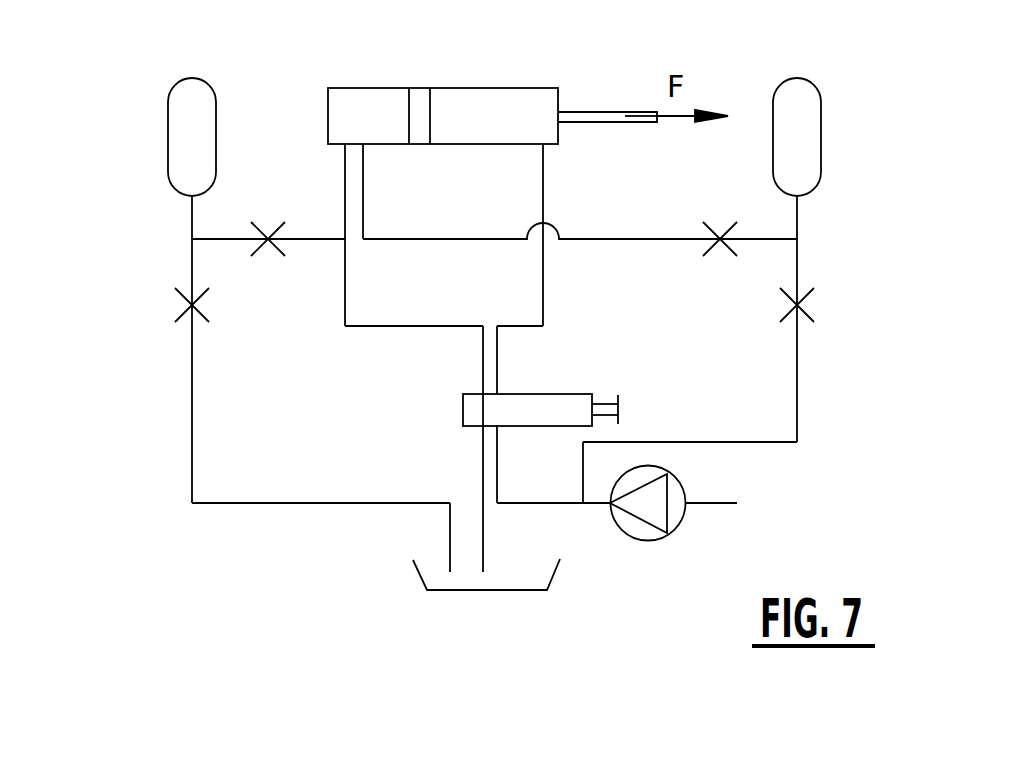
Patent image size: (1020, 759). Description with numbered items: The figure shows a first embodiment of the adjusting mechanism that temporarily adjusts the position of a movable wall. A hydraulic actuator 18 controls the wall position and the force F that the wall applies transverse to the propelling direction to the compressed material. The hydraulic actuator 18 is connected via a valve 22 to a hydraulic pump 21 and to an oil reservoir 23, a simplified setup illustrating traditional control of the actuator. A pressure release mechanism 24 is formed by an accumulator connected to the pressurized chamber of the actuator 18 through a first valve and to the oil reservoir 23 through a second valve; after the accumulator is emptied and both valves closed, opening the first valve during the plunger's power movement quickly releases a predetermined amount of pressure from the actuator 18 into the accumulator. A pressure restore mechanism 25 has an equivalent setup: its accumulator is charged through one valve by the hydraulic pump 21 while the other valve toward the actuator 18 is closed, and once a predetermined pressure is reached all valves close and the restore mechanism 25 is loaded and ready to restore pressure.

The hydraulic actuator 18 is at (360, 88).
The hydraulic pump 21 is at (633, 532).
The valve 22 is at (555, 398).
The oil reservoir 23 is at (517, 592).
The pressure release mechanism 24 is at (138, 108).
The pressure restore mechanism 25 is at (866, 110).